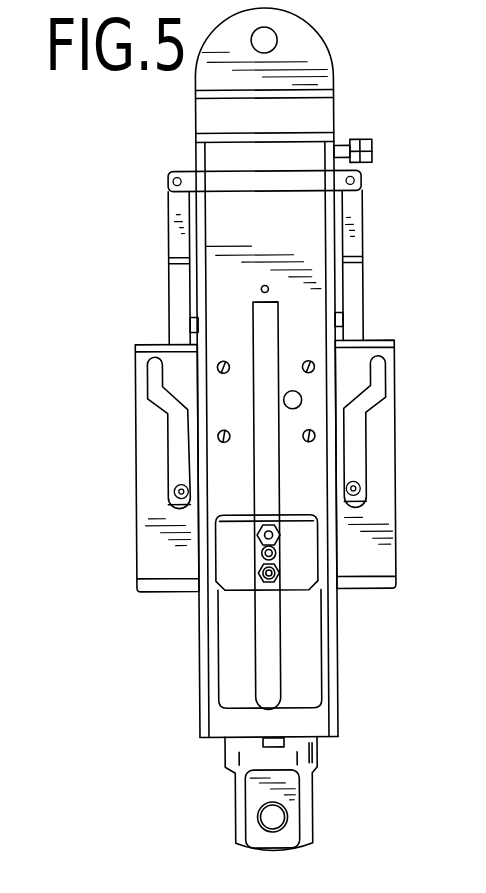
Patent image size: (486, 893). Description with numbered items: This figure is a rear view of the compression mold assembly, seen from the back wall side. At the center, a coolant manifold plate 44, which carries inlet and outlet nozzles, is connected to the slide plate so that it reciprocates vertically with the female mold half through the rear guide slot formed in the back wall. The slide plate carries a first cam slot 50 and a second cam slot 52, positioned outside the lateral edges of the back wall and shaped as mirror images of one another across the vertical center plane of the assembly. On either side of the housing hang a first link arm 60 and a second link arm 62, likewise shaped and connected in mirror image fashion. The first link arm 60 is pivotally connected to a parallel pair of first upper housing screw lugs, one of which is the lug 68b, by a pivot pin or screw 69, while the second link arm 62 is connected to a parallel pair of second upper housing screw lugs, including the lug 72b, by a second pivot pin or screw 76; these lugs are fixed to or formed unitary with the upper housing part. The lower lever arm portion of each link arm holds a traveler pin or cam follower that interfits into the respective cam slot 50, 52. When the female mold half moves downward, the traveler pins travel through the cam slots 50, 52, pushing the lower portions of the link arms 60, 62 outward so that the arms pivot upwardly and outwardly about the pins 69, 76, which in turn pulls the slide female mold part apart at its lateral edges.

The coolant manifold plate 44 is at (302, 557).
The first cam slot 50 is at (364, 443).
The second cam slot 52 is at (173, 457).
The first link arm 60 is at (172, 237).
The second link arm 62 is at (363, 231).
The first upper housing screw lug 68b is at (357, 180).
The pivot pin or screw 69 is at (353, 176).
The second upper housing screw lug 72b is at (174, 181).
The second pivot pin or screw 76 is at (178, 176).